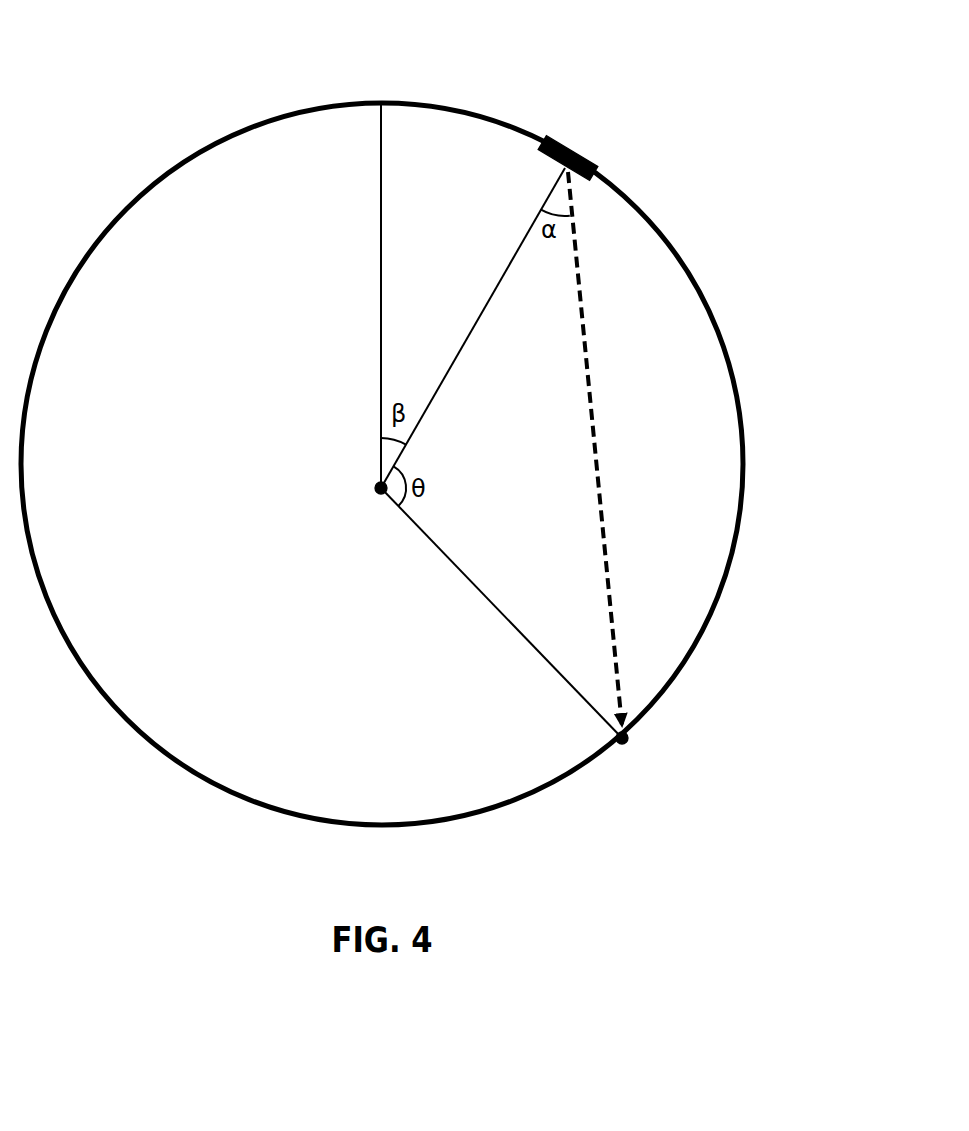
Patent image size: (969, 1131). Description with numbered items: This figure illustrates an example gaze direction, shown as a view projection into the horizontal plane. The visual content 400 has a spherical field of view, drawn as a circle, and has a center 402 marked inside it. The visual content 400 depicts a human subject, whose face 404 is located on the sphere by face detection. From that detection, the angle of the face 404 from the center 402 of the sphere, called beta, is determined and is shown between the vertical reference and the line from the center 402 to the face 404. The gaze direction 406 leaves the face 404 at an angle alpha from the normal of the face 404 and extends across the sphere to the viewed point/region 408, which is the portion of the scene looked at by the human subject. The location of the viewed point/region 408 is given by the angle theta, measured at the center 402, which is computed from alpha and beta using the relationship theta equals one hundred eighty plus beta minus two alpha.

The visual content 400 is at (395, 48).
The center 402 is at (380, 487).
The face 404 is at (580, 135).
The gaze direction 406 is at (607, 580).
The viewed point/region 408 is at (782, 905).